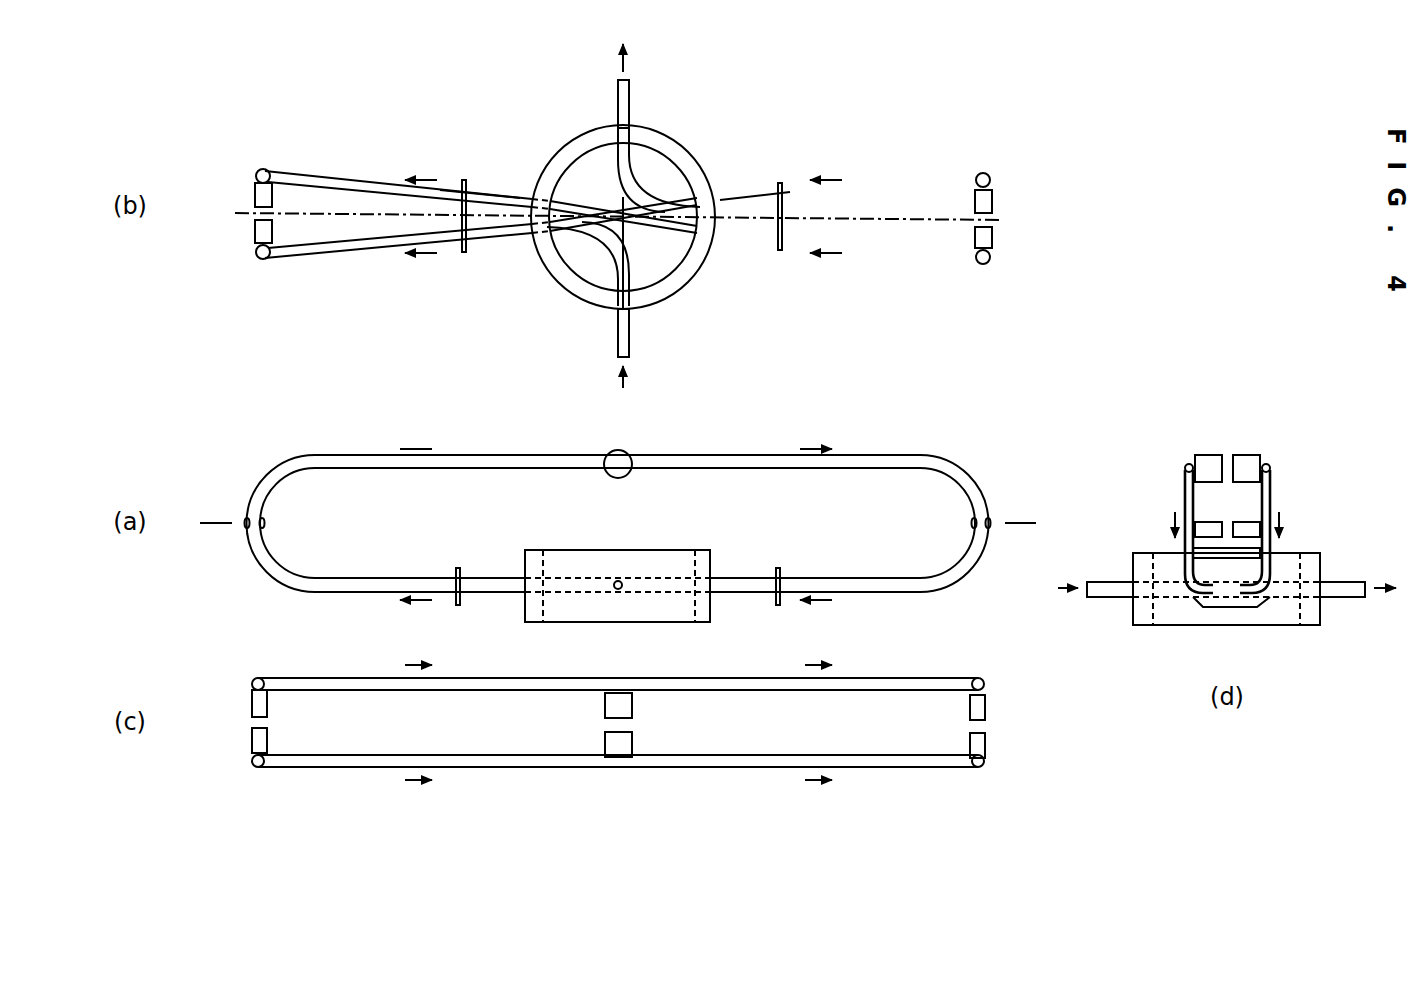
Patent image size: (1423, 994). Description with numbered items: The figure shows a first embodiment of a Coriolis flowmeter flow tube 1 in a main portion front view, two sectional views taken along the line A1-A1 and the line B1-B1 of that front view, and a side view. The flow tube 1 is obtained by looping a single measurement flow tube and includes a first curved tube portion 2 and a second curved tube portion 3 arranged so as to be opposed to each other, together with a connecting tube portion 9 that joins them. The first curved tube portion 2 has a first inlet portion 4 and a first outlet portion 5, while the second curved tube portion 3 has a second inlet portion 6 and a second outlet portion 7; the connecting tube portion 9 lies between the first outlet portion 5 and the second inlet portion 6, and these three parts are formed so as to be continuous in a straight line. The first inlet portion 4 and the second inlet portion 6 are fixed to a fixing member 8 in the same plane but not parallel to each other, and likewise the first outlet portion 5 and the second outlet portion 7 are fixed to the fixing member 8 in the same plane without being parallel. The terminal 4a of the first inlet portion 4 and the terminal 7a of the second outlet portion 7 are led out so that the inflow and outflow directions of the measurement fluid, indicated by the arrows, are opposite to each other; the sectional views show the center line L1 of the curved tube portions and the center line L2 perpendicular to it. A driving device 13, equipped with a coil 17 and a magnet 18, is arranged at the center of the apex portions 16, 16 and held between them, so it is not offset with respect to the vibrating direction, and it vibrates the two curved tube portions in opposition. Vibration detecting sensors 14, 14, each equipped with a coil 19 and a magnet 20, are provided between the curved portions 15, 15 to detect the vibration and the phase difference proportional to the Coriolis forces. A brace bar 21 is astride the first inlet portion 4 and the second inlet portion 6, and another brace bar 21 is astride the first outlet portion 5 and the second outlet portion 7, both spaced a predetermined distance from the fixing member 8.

The flow tube 1 is at (903, 152).
The first curved tube portion 2 is at (362, 258).
The second curved tube portion 3 is at (378, 172).
The first inlet portion 4 is at (503, 232).
The first outlet portion 5 is at (752, 232).
The second inlet portion 6 is at (503, 192).
The second outlet portion 7 is at (752, 200).
The fixing member 8 is at (597, 298).
The connecting tube portion 9 is at (658, 225).
The driving device 13 is at (632, 458).
The vibration detecting sensor 14 is at (205, 185).
The curved portion 15 is at (265, 472).
The apex portion 16 is at (562, 456).
The coil 17 is at (606, 708).
The magnet 18 is at (606, 742).
The coil 19 is at (256, 196).
The magnet 20 is at (256, 232).
The brace bar 21 is at (464, 178).
The terminal of the first inlet portion 4a is at (630, 338).
The terminal of the second outlet portion 7a is at (630, 96).
The center line L1 is at (866, 222).
The center line L2 is at (623, 197).
The line A1- A1 is at (215, 520).
The line B1- B1 is at (215, 527).